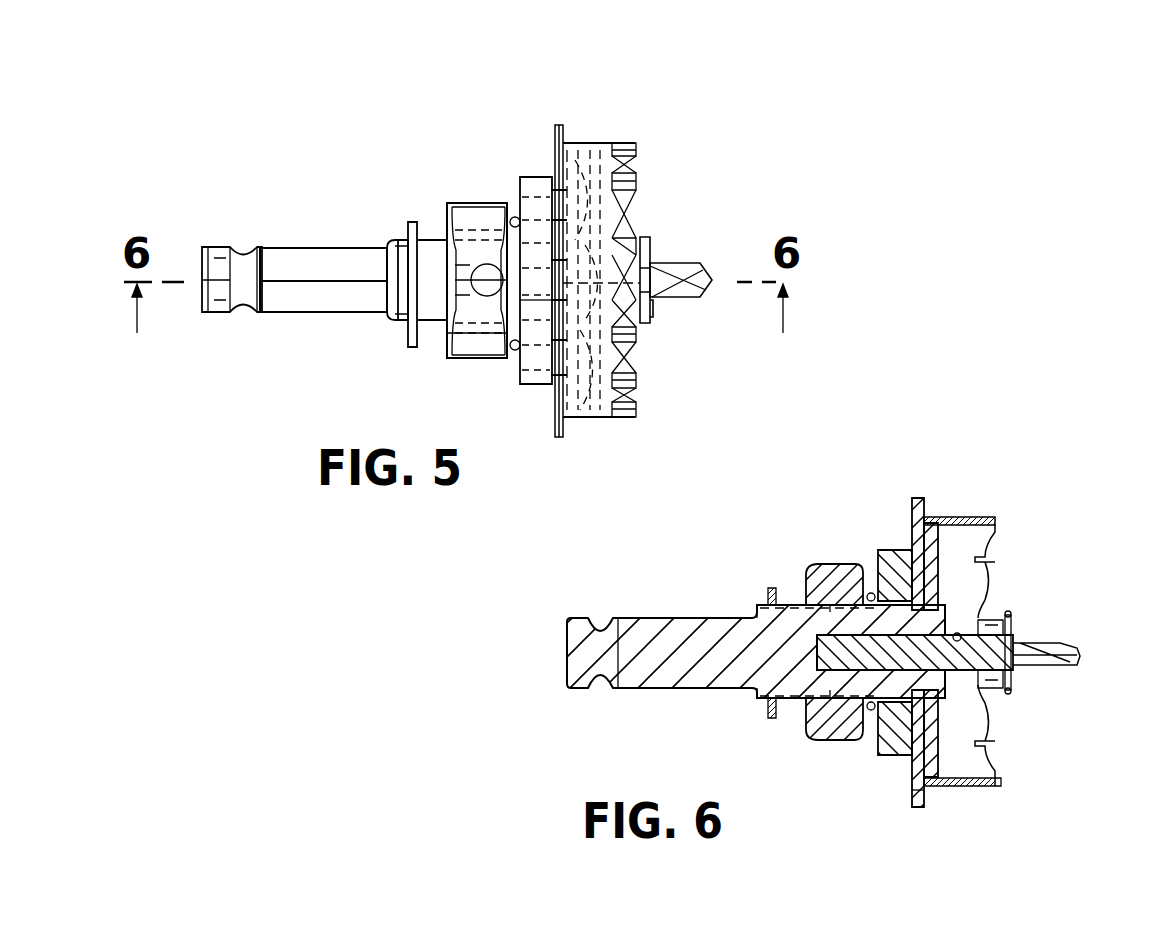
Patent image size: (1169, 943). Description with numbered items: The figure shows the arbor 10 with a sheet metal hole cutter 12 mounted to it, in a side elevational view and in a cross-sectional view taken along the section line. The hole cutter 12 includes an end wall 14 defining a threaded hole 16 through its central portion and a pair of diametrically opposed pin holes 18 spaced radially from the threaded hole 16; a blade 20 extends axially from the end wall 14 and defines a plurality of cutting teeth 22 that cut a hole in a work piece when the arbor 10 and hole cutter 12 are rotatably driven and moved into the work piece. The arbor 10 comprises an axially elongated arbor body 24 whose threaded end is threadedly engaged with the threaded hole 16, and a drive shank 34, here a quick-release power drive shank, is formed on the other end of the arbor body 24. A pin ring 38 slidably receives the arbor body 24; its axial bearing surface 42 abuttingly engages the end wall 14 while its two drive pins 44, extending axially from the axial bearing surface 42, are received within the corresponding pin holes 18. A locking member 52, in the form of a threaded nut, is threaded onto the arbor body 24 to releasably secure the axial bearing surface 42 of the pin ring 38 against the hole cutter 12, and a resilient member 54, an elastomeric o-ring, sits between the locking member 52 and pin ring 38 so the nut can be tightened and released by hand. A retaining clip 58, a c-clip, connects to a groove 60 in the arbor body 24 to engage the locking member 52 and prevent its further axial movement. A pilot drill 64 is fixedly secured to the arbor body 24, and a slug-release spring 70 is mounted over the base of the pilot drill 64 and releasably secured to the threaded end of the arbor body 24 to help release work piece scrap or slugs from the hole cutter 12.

In FIG. 5, the arbor 10 is at (400, 94).
In FIG. 6, the arbor 10 is at (780, 492).
In FIG. 5, the hole cutter 12 is at (610, 138).
In FIG. 6, the hole cutter 12 is at (1015, 485).
In FIG. 5, the end wall 14 is at (555, 150).
In FIG. 6, the end wall 14 is at (912, 512).
In FIG. 6, the threaded hole 16 is at (910, 800).
In FIG. 5, the pin holes 18 is at (585, 138).
In FIG. 6, the blade 20 is at (988, 790).
In FIG. 6, the cutting teeth 22 is at (1013, 548).
In FIG. 5, the arbor body 24 is at (290, 222).
In FIG. 6, the arbor body 24 is at (657, 602).
In FIG. 5, the drive shank 34 is at (285, 318).
In FIG. 6, the drive shank 34 is at (640, 690).
In FIG. 5, the pin ring 38 is at (540, 388).
In FIG. 6, the pin ring 38 is at (882, 550).
In FIG. 5, the axial bearing surface 42 is at (535, 177).
In FIG. 6, the axial bearing surface 42 is at (905, 765).
In FIG. 5, the drive pins 44 is at (625, 143).
In FIG. 5, the locking member 52 is at (470, 203).
In FIG. 6, the locking member 52 is at (808, 745).
In FIG. 5, the resilient member 54 is at (512, 365).
In FIG. 6, the resilient member 54 is at (860, 742).
In FIG. 5, the retaining clip 58 is at (410, 222).
In FIG. 6, the retaining clip 58 is at (771, 588).
In FIG. 5, the groove 60 is at (393, 322).
In FIG. 6, the groove 60 is at (765, 700).
In FIG. 5, the pilot drill 64 is at (698, 300).
In FIG. 6, the pilot drill 64 is at (1065, 640).
In FIG. 5, the slug-release spring 70 is at (648, 238).
In FIG. 6, the slug-release spring 70 is at (1013, 690).